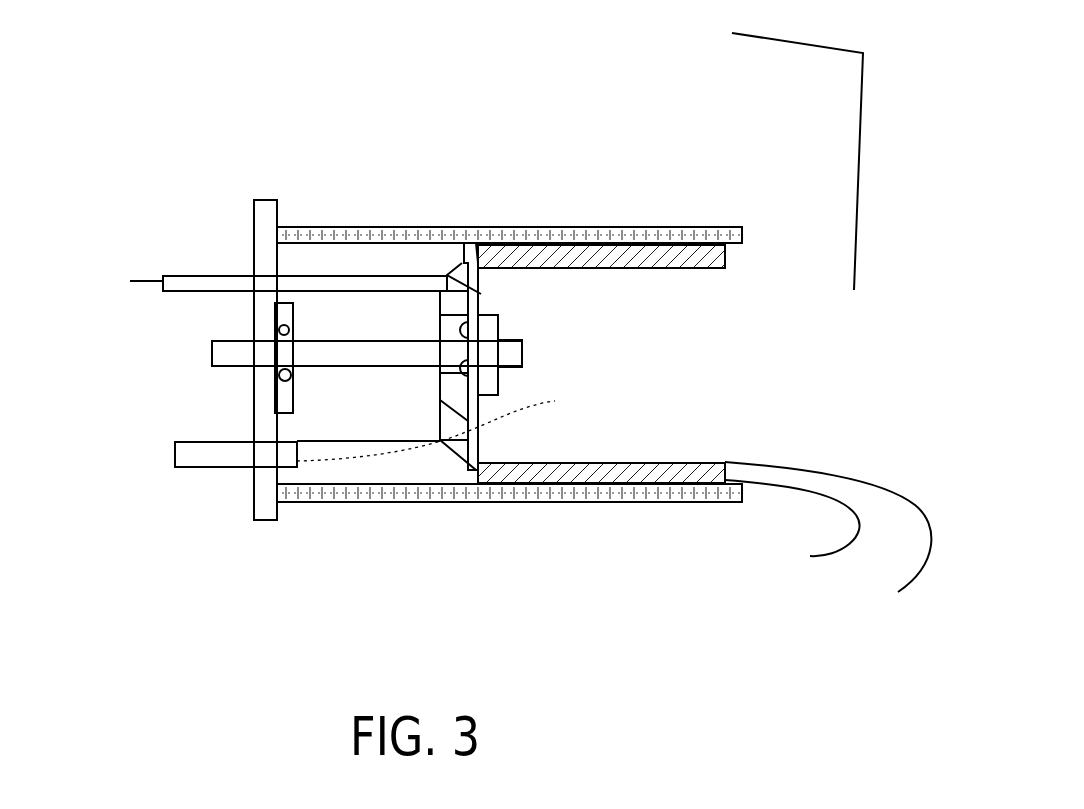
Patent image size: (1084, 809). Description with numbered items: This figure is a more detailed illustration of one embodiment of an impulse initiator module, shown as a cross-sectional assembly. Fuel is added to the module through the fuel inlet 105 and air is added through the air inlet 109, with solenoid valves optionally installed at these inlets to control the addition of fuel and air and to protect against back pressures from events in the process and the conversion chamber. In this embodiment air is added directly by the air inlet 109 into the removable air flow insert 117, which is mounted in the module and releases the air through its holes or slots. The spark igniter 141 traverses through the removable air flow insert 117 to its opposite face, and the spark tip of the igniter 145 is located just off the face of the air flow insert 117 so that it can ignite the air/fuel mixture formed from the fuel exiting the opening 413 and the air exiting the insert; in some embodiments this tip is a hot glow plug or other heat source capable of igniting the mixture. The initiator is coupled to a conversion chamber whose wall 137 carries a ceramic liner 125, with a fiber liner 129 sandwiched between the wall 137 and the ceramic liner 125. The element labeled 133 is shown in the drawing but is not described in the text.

The fuel inlet 105 is at (209, 352).
The air inlet 109 is at (171, 455).
The removable air flow insert 117 is at (383, 318).
The ceramic liner 125 is at (900, 592).
The fiber liner 129 is at (810, 556).
The frame 133 is at (846, 150).
The wall 137 is at (370, 503).
The spark igniter 141 is at (120, 278).
The spark tip of the igniter 145 is at (470, 228).
The opening 413 is at (527, 352).